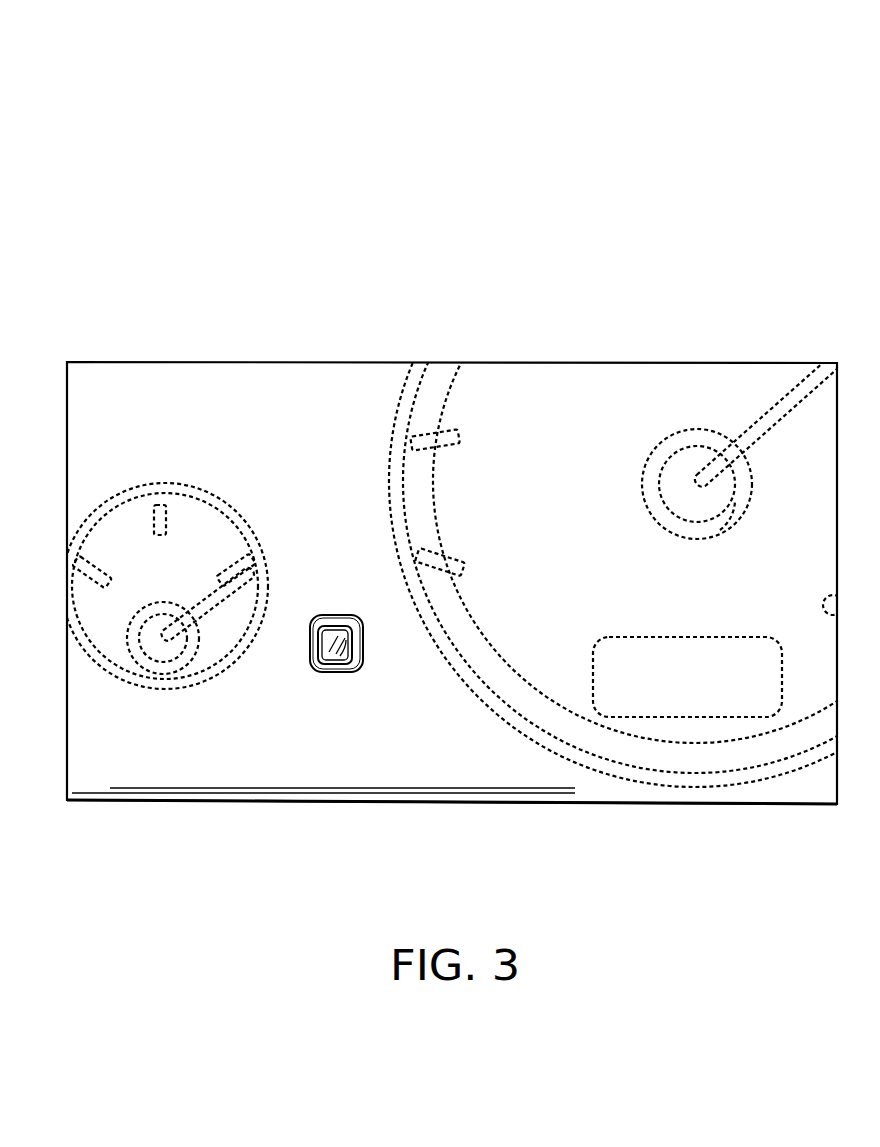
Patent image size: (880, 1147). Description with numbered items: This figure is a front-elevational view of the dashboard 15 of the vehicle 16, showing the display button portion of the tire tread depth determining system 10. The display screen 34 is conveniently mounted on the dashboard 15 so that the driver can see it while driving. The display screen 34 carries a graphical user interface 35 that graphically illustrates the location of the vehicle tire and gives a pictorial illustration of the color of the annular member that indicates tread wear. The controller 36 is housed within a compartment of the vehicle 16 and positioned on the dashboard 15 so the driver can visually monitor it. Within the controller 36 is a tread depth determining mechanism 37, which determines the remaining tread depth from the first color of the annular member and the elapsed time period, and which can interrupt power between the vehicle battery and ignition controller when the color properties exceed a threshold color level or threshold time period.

The vehicle tire tread depth determining system 10 is at (466, 115).
The dashboard 15 is at (303, 380).
The vehicle 16 is at (193, 361).
The display screen 34 is at (312, 672).
The graphical user interface 35 is at (350, 655).
The controller 36 is at (320, 673).
The tread depth determining mechanism 37 is at (362, 647).